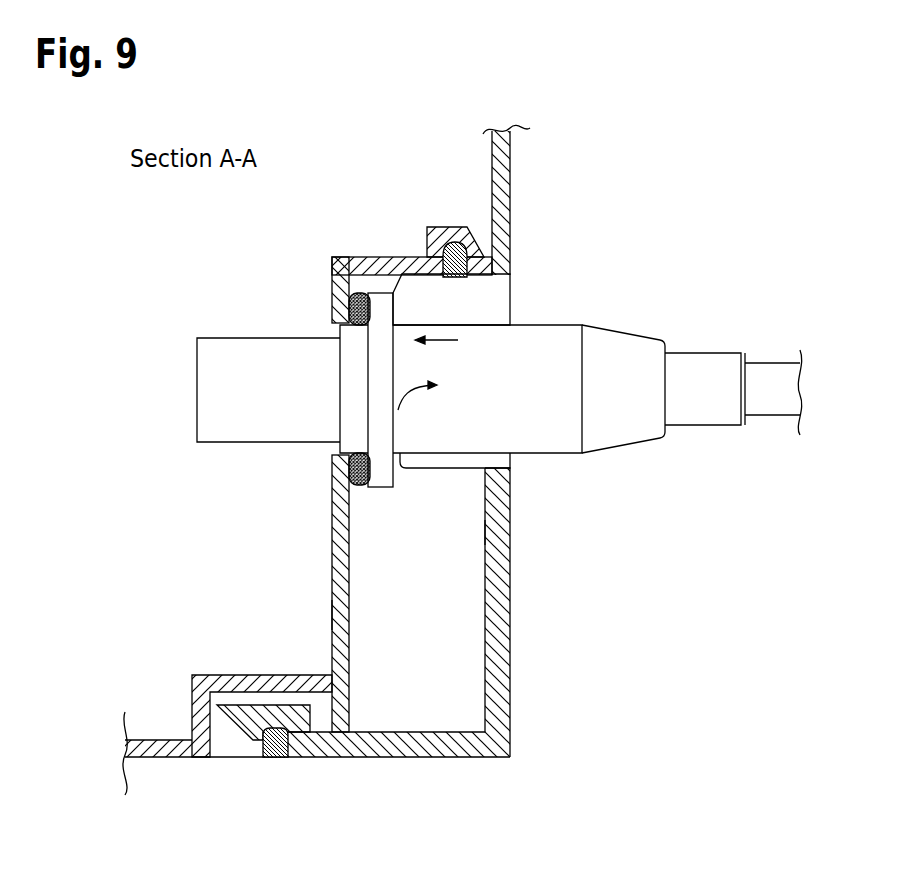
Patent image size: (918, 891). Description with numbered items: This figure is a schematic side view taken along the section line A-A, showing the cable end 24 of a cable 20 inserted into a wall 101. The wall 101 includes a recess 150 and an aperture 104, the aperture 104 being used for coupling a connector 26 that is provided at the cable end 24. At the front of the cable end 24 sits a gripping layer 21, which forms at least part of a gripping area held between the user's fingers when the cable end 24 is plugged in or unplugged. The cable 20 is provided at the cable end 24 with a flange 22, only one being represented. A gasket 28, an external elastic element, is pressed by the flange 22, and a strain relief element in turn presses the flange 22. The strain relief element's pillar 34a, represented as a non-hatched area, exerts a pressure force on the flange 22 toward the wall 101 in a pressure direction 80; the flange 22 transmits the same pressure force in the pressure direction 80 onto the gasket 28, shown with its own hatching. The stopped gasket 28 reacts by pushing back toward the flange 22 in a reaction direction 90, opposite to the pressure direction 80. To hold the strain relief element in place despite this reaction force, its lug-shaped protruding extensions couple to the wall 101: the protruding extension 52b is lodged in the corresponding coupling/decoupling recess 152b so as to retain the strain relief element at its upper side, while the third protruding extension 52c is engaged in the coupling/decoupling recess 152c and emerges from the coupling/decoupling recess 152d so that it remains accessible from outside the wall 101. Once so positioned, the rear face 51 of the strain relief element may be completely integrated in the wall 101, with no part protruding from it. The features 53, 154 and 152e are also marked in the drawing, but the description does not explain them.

The wall 101 is at (505, 173).
The coupling/decoupling recess 152b is at (427, 240).
The protruding extension 52b is at (480, 263).
The pillar 34a is at (467, 302).
The gasket 28 is at (330, 300).
The aperture 104 is at (330, 332).
The reaction direction 90 is at (393, 407).
The connector 26 is at (225, 402).
The cable end 24 is at (352, 417).
The pressure direction 80 is at (440, 342).
The cable 20 is at (669, 338).
The gripping layer 21 is at (563, 405).
The flange 22 is at (380, 435).
The groove 53 is at (485, 532).
The recess 150 is at (348, 578).
The side wall 154 is at (330, 613).
The coupling/decoupling recess 152c is at (320, 703).
The coupling/decoupling recess 152d is at (217, 753).
The third protruding extension 52c is at (233, 717).
The protrusion 152e is at (275, 752).
The rear face 51 is at (510, 693).